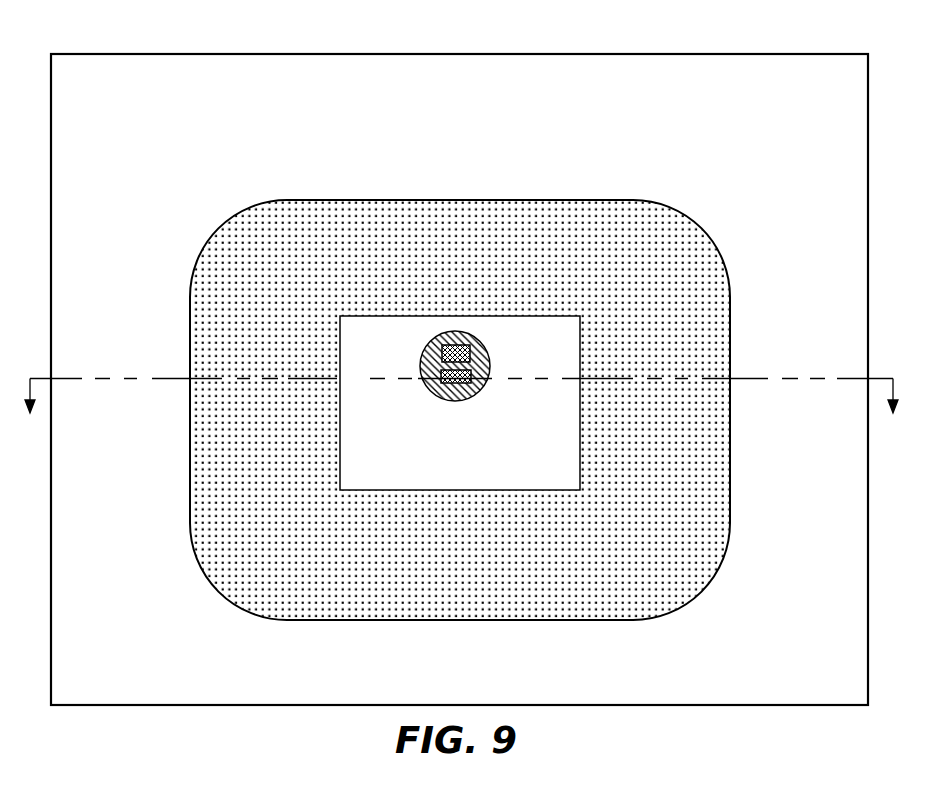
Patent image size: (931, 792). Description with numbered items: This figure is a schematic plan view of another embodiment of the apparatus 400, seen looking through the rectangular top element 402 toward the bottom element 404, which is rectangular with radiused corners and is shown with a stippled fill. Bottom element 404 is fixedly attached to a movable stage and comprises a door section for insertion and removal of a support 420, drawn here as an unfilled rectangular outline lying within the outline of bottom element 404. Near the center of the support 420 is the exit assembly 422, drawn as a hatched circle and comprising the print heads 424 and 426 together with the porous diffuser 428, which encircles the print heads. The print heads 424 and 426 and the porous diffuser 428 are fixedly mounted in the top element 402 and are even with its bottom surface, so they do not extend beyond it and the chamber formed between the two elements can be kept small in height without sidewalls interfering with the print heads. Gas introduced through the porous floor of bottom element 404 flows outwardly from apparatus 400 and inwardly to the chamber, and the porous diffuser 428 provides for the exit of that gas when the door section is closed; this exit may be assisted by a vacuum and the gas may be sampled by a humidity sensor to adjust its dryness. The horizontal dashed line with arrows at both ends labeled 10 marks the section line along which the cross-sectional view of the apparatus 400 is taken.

The apparatus 400 is at (719, 36).
The top element 402 is at (663, 55).
The bottom element 404 is at (698, 221).
The support 420 is at (498, 316).
The exit assembly 422 is at (431, 324).
The print head 424 is at (469, 356).
The porous diffuser 428 is at (487, 369).
The print head 426 is at (458, 401).
The section line 10- 10 is at (460, 413).